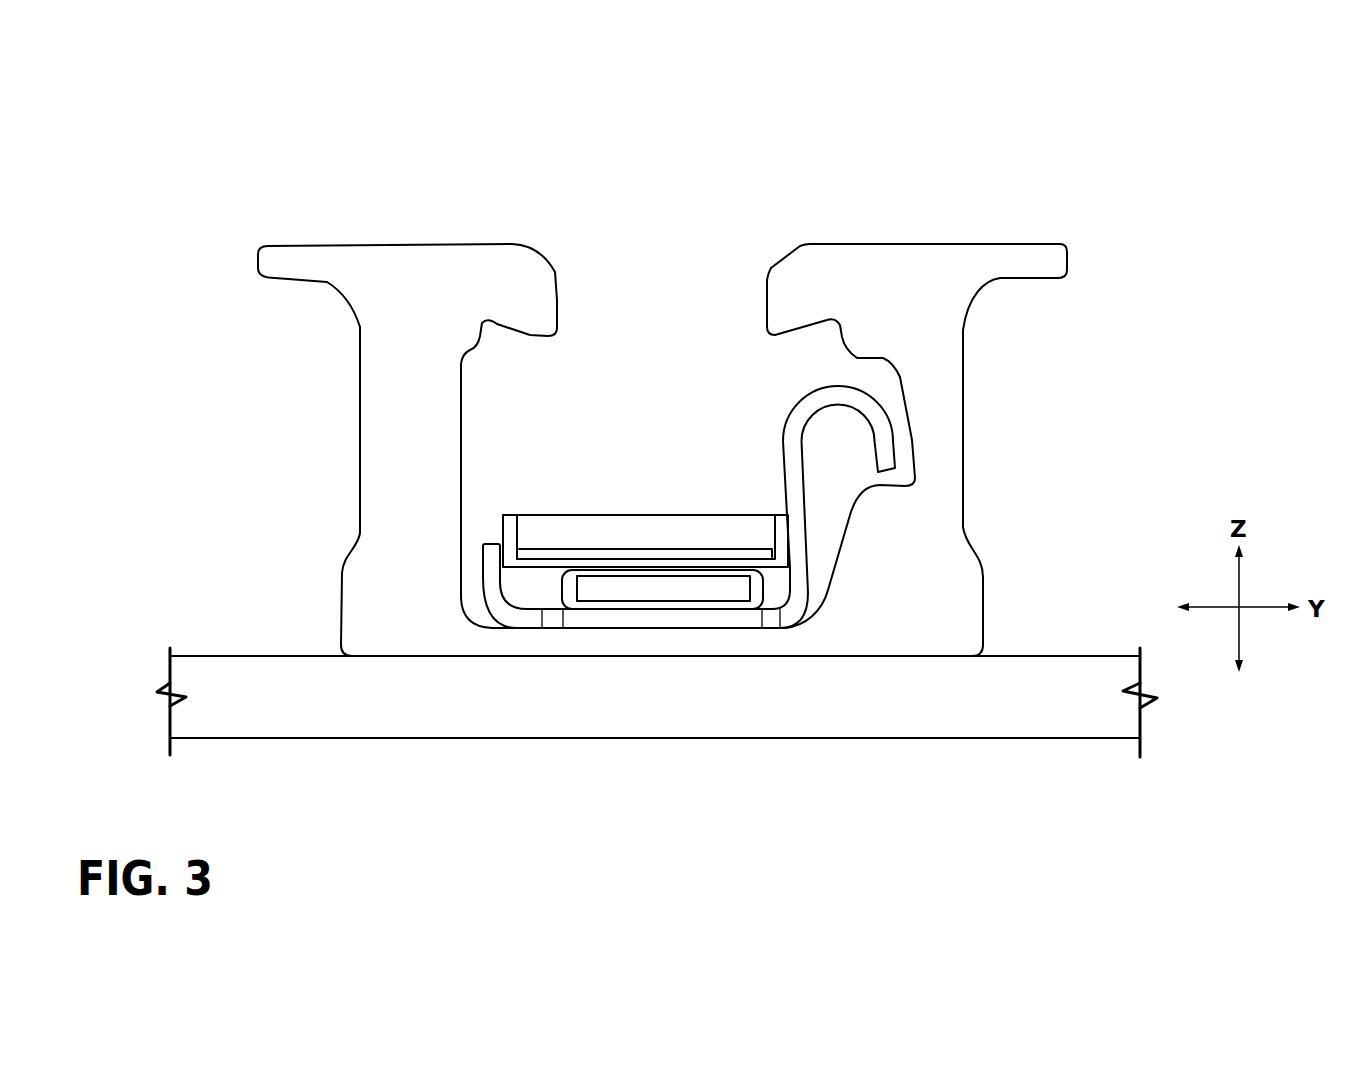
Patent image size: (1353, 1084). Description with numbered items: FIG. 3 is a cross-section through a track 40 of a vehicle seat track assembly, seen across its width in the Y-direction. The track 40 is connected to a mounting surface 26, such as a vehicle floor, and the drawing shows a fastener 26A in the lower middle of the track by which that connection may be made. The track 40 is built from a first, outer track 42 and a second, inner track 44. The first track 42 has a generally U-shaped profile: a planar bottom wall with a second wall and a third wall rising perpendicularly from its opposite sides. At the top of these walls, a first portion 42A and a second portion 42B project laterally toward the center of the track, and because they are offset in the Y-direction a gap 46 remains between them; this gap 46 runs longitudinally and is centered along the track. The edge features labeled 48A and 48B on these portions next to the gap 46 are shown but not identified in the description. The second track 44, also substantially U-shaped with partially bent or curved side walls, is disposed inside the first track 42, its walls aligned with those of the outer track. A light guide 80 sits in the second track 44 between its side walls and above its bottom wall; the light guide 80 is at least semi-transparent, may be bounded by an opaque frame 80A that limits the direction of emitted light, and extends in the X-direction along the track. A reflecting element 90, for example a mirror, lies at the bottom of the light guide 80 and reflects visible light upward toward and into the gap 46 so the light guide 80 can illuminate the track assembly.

The mounting surface 26 is at (330, 740).
The fastener 26A is at (632, 587).
The track 40 is at (669, 473).
The first track 42 is at (669, 490).
The first portion 42A is at (407, 250).
The second portion 42B is at (917, 267).
The second track 44 is at (724, 599).
The gap 46 is at (694, 288).
The first chamfered edge 48A is at (540, 248).
The second chamfered edge 48B is at (772, 262).
The light guide 80 is at (635, 489).
The frame 80A is at (513, 523).
The reflecting element 90 is at (545, 552).